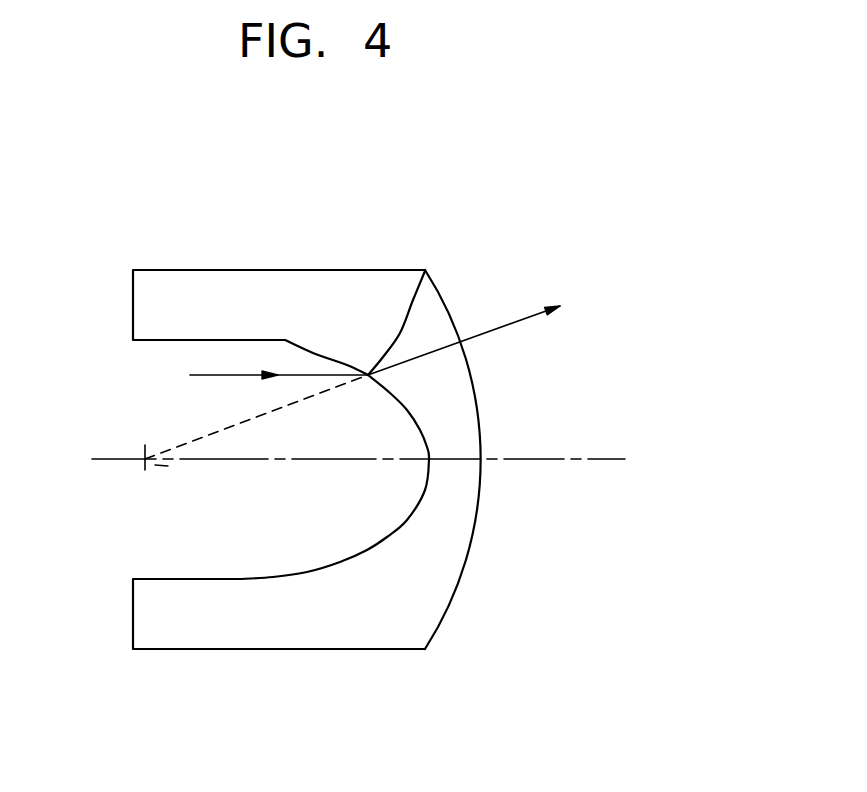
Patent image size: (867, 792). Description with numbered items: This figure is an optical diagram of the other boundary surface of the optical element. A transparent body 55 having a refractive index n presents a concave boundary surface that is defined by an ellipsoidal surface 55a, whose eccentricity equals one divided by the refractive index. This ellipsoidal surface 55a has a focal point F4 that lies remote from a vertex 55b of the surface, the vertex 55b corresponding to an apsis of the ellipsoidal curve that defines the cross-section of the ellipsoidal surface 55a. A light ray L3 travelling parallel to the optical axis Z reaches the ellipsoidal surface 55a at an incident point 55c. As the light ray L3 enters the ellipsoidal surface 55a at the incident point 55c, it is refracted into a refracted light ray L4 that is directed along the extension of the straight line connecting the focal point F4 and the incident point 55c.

The transparent body 55 is at (362, 290).
The ellipsoidal surface 55a is at (420, 422).
The vertex 55b is at (430, 460).
The incident point 55c is at (425, 272).
The light ray L3 is at (302, 375).
The refracted light ray L4 is at (522, 317).
The focal point F4 is at (143, 459).
The optical axis Z is at (378, 459).